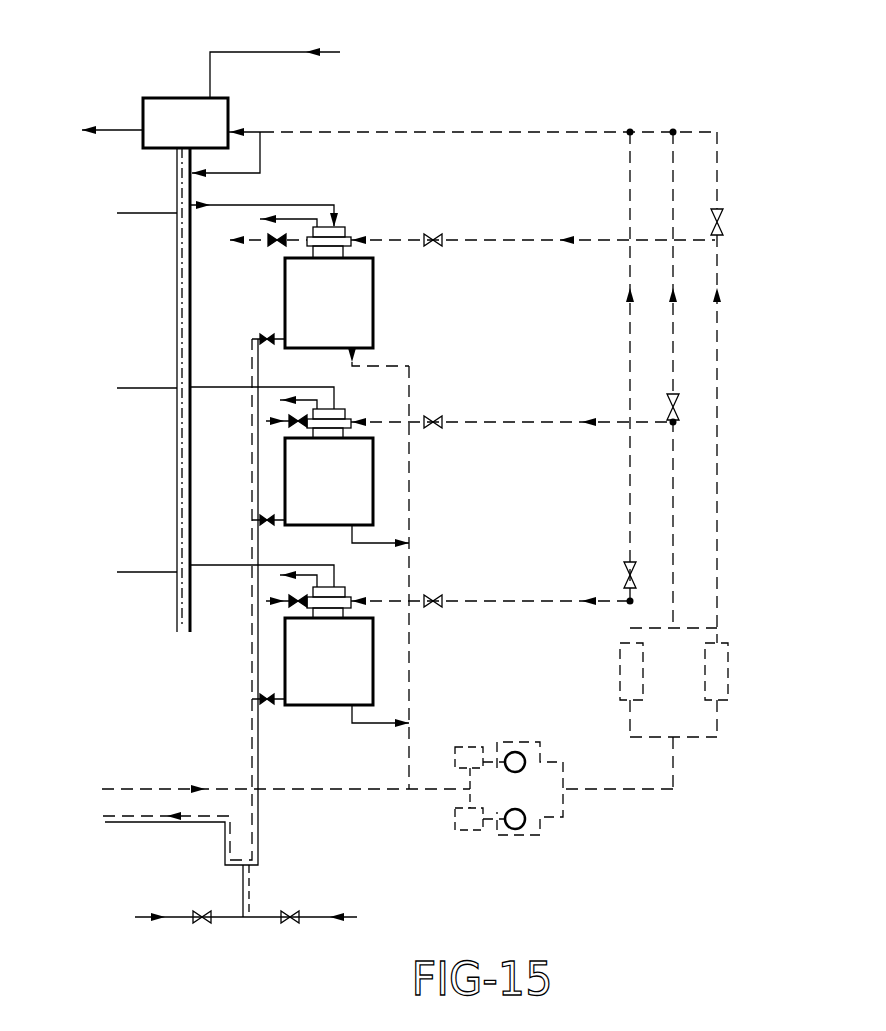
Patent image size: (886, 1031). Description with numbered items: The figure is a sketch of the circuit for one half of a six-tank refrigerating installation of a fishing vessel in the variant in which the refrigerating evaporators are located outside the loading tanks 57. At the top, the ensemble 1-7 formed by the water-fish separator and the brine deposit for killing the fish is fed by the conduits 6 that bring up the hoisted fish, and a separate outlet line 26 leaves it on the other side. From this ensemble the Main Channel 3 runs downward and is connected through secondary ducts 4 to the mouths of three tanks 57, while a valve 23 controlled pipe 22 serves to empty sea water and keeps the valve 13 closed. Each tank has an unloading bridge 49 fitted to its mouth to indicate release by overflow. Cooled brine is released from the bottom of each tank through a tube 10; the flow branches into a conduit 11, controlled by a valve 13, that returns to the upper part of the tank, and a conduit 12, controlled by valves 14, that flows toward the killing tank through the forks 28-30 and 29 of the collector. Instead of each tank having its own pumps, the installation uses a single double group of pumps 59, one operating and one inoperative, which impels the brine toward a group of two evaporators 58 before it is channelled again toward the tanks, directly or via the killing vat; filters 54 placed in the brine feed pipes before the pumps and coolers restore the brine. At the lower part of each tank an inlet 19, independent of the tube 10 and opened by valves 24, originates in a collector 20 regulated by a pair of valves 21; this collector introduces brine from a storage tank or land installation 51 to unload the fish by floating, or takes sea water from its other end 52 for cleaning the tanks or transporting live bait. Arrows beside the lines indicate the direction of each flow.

The conduits 6 is at (275, 49).
The discharge line 26 is at (112, 96).
The water-fish separator and killing deposit ensemble 1-7 is at (230, 111).
The fork of the collector 29 is at (299, 130).
The forks of the collector 28-30 is at (474, 361).
The secondary ducts 4 is at (235, 187).
The unloading bridge 49 is at (338, 203).
The tank 57 is at (361, 312).
The pipe 22 is at (165, 390).
The Main Channel 3 is at (152, 390).
The tube 10 is at (380, 577).
The valve 23 is at (252, 443).
The conduit 11 is at (533, 381).
The valve 13 is at (493, 409).
The valve 14 is at (701, 380).
The valves 24 is at (230, 530).
The inlet 19 is at (277, 528).
The collector 20 is at (286, 628).
The valves 21 is at (246, 953).
The other end of the collector 52 is at (155, 954).
The storage tank or land installation 51 is at (335, 954).
The evaporators 58 is at (704, 665).
The conduit 12 is at (678, 754).
The filters 54 is at (516, 757).
The double group of pumps 59 is at (499, 813).